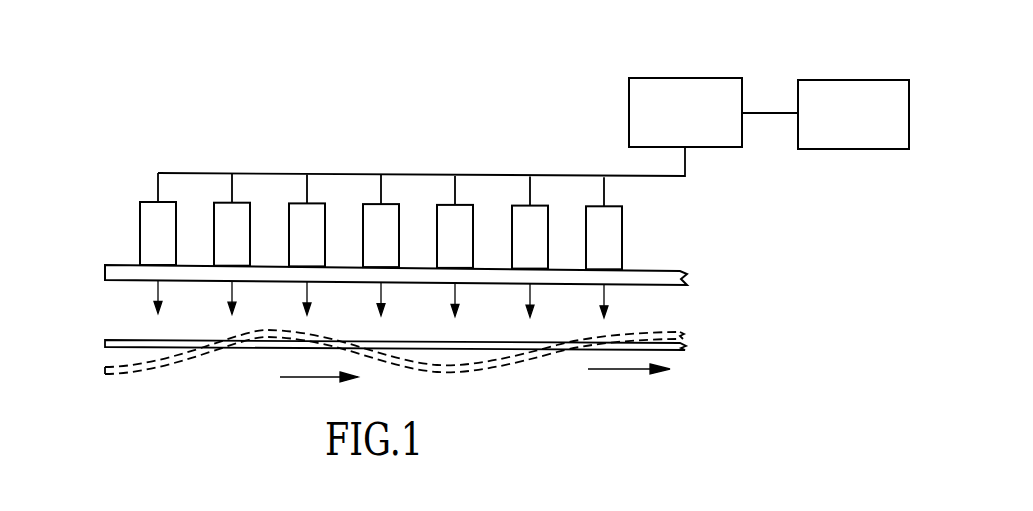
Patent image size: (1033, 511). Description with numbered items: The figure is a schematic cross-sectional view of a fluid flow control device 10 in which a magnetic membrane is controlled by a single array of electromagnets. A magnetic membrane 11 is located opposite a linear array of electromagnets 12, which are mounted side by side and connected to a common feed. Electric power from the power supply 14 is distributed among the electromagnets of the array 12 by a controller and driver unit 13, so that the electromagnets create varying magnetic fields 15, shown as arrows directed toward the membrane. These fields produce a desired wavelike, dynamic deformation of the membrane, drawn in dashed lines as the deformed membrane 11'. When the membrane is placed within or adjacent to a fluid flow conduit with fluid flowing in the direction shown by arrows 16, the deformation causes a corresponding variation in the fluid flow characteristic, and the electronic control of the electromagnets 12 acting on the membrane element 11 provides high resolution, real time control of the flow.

The fluid flow control device 10 is at (283, 152).
The magnetic membrane 11 is at (365, 321).
The deformed membrane 11' is at (368, 380).
The array of electromagnets 12 is at (232, 223).
The controller and driver unit 13 is at (670, 78).
The power supply 14 is at (862, 80).
The magnetic fields 15 is at (601, 298).
The arrows indicating fluid flow 16 is at (456, 375).